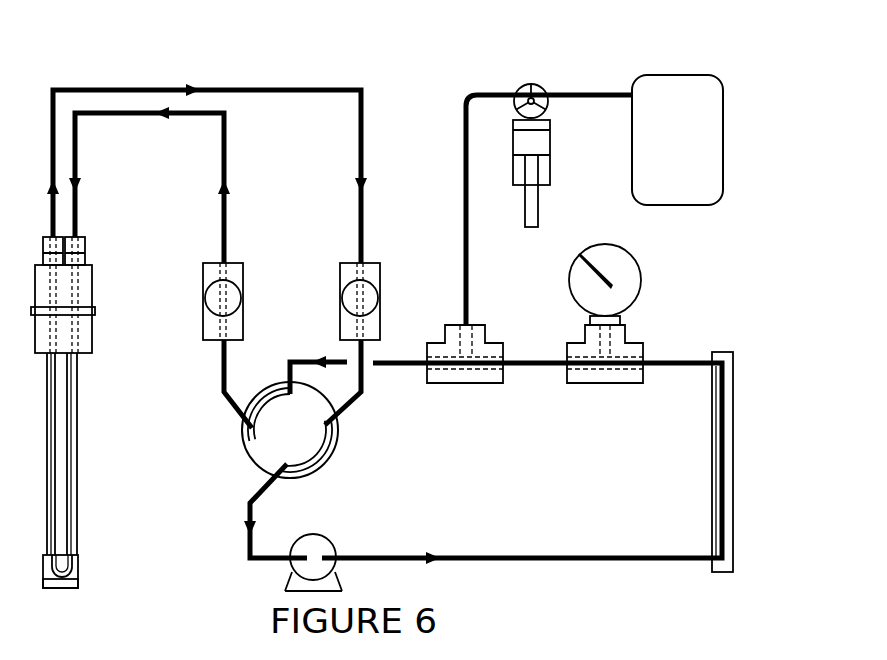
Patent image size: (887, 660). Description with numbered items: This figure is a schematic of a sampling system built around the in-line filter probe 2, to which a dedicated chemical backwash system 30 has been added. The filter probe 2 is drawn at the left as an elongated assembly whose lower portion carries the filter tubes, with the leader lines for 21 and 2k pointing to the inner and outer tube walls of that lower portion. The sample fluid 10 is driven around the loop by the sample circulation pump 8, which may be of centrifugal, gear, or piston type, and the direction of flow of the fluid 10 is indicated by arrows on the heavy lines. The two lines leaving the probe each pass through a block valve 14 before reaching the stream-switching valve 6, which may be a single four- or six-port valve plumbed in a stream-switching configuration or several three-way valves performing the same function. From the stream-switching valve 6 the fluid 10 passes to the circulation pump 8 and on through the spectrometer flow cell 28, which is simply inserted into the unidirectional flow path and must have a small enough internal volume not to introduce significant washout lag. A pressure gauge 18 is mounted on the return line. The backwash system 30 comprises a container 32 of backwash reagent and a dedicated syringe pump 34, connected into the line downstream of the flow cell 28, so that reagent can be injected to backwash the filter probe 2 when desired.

The filter probe 2 is at (101, 412).
The outer tube 2k is at (73, 511).
The inner tube 21 is at (50, 497).
The stream-switching valve 6 is at (313, 473).
The sample circulation pump 8 is at (290, 584).
The sample fluid 10 is at (97, 90).
The block valves 14 is at (203, 303).
The pressure gauge 18 is at (645, 297).
The spectrometer flow cell 28 is at (712, 420).
The dedicated chemical backwash system 30 is at (622, 166).
The container of backwash reagent 32 is at (687, 77).
The dedicated syringe pump 34 is at (537, 87).